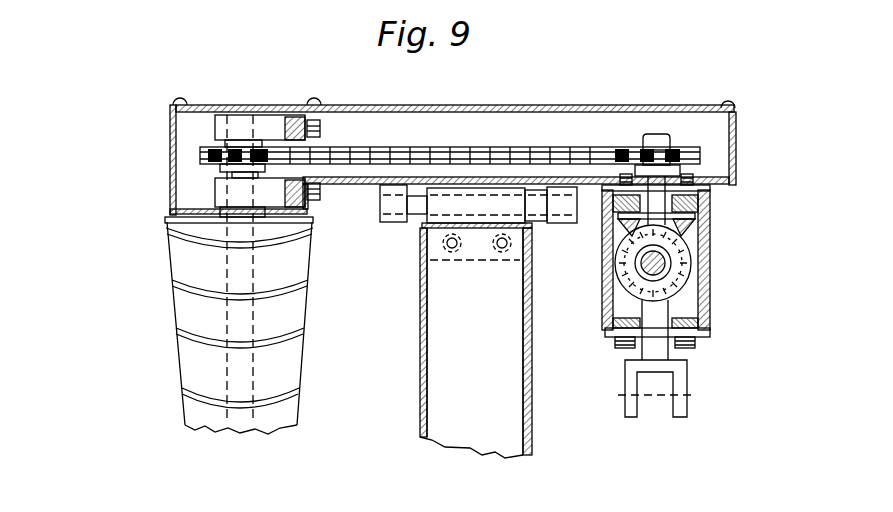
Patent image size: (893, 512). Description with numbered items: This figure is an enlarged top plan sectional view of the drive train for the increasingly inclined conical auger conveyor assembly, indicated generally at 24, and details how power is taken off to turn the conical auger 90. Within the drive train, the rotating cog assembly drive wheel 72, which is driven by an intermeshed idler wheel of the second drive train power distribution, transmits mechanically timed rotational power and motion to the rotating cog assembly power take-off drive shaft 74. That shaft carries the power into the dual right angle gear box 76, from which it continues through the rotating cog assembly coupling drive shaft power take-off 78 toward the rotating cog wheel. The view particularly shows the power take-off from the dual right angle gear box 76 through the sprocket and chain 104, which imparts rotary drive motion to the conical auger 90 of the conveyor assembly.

The transfer apparatus 24 is at (142, 287).
The sprocket and chain 104 is at (566, 150).
The conical auger 90 is at (292, 308).
The rotating cog assembly drive wheel 72 is at (690, 276).
The rotating cog assembly power take-off drive shaft 74 is at (664, 262).
The dual right angle gear box 76 is at (708, 306).
The rotating cog assembly coupling drive shaft power take-off 78 is at (685, 382).